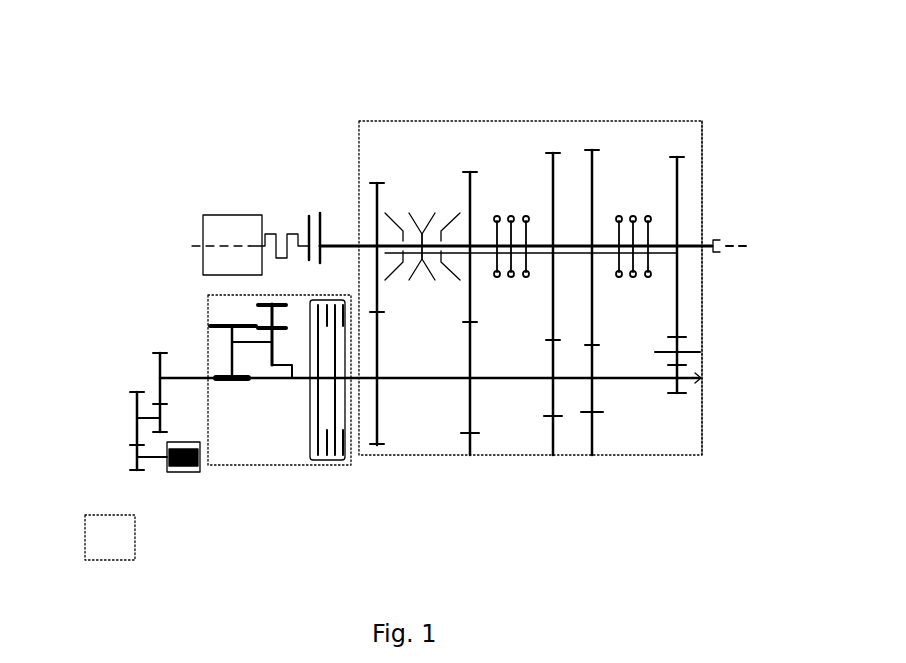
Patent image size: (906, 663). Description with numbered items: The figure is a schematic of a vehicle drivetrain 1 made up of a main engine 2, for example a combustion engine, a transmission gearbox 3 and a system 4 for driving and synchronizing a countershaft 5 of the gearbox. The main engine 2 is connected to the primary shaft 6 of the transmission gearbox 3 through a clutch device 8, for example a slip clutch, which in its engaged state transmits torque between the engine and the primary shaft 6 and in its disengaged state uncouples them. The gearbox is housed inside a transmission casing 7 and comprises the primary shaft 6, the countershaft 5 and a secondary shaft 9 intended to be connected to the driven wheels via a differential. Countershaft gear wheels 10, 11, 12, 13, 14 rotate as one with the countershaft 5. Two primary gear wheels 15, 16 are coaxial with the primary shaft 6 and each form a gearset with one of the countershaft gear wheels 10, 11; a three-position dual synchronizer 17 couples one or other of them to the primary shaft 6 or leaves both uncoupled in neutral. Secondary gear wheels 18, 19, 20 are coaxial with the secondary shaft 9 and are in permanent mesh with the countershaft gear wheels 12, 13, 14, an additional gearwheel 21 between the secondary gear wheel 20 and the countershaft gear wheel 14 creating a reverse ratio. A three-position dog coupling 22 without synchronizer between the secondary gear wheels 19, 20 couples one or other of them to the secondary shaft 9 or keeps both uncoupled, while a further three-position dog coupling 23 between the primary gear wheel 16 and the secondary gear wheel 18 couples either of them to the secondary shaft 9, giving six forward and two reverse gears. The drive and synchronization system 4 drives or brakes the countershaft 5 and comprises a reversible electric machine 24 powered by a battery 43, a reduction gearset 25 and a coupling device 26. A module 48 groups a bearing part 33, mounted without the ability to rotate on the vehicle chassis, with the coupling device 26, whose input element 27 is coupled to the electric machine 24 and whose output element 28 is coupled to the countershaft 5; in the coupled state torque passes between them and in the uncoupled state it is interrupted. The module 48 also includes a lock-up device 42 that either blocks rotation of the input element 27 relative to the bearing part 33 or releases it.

The drivetrain 1 is at (517, 95).
The main engine 2 is at (203, 247).
The transmission gearbox 3 is at (665, 113).
The drive and synchronization system 4 is at (110, 465).
The countershaft 5 is at (630, 380).
The primary shaft 6 is at (372, 240).
The transmission casing 7 is at (708, 160).
The clutch device 8 is at (314, 228).
The secondary shaft 9 is at (716, 244).
The countershaft gear wheel 10 is at (377, 445).
The countershaft gear wheel 11 is at (470, 455).
The countershaft gear wheel 12 is at (553, 455).
The countershaft gear wheel 13 is at (592, 455).
The countershaft gear wheel 14 is at (679, 394).
The primary gear wheel 15 is at (377, 183).
The primary gear wheel 16 is at (470, 172).
The three-position dual synchronizer 17 is at (420, 198).
The secondary gear wheel 18 is at (553, 153).
The secondary gear wheel 19 is at (592, 150).
The secondary gear wheel 20 is at (677, 157).
The additional gearwheel 21 is at (679, 340).
The three-position dog coupling 22 is at (628, 192).
The three-position dog coupling 23 is at (509, 193).
The reversible electric machine 24 is at (183, 474).
The reduction gearset 25 is at (127, 418).
The coupling device 26 is at (328, 452).
The input element 27 is at (311, 395).
The output element 28 is at (344, 395).
The bearing part 33 is at (231, 357).
The lock-up device 42 is at (231, 311).
The battery 43 is at (170, 473).
The module 48 is at (254, 470).